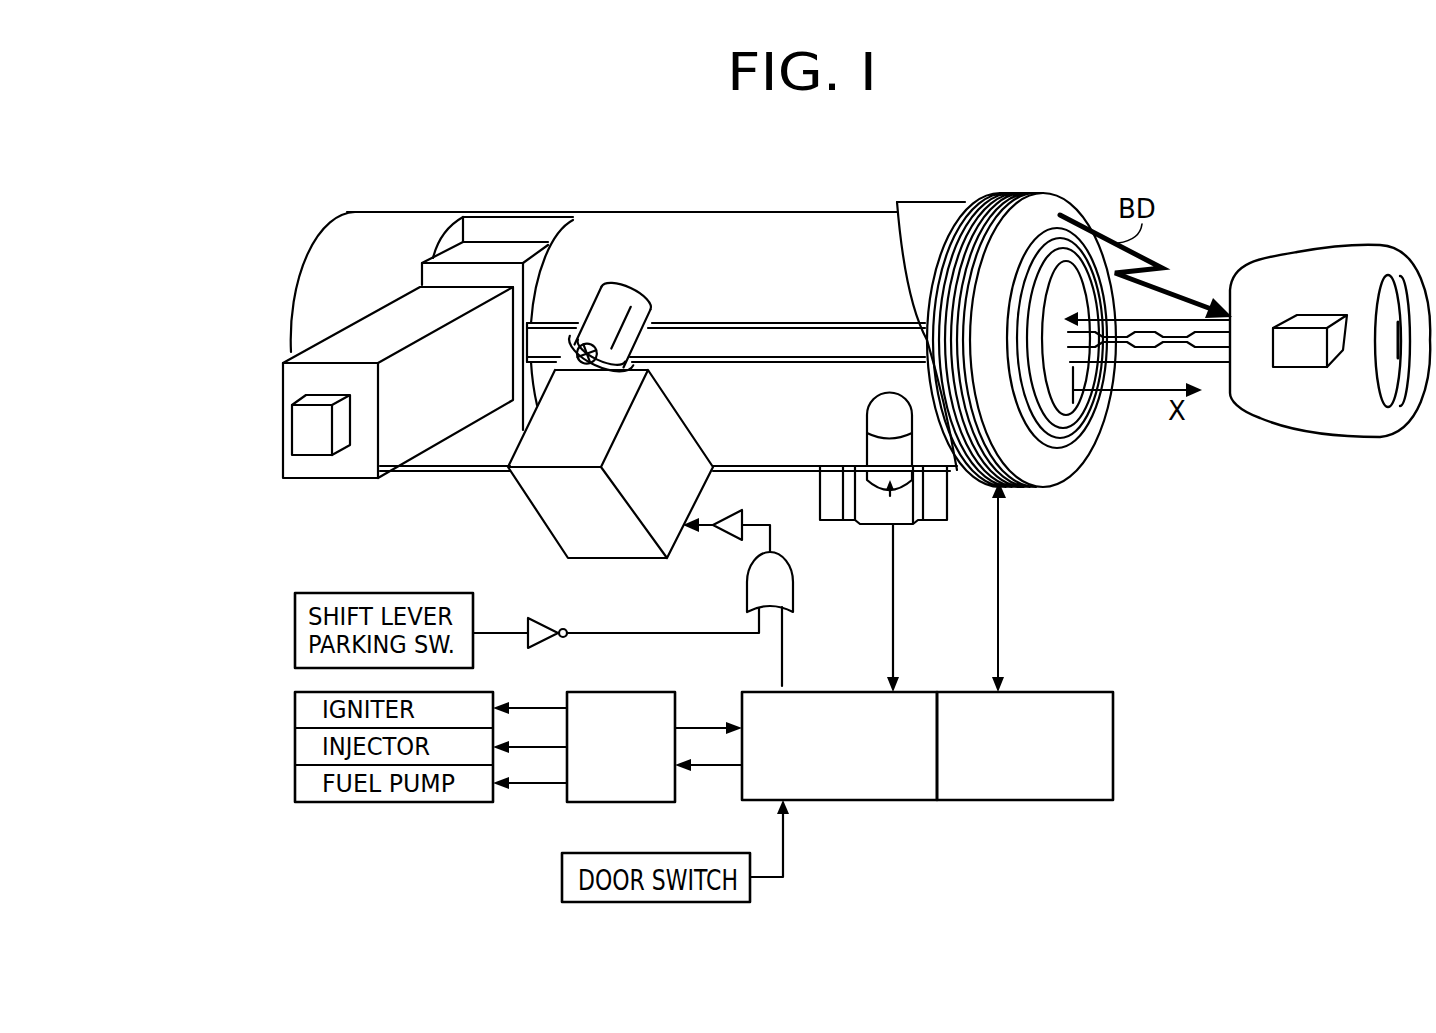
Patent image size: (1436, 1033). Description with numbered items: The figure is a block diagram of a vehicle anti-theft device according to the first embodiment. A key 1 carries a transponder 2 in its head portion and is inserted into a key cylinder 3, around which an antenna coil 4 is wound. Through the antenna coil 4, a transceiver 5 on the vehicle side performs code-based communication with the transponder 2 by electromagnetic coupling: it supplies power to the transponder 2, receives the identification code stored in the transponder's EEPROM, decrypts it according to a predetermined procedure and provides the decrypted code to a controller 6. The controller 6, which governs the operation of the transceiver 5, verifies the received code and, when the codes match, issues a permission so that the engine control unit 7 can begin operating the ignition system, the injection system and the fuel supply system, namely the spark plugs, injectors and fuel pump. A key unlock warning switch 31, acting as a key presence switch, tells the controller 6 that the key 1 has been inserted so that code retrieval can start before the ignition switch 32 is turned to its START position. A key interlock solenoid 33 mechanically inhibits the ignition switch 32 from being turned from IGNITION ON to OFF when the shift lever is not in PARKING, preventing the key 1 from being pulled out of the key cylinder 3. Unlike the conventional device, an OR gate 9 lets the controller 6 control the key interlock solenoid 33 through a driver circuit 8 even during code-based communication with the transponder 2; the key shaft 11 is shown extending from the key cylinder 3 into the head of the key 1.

The key 1 is at (1393, 256).
The transponder 2 is at (1298, 358).
The key cylinder 3 is at (723, 228).
The antenna coil 4 is at (997, 200).
The transceiver 5 is at (993, 802).
The controller 6 is at (838, 802).
The engine control unit (ECU) 7 is at (677, 790).
The driver circuit 8 is at (742, 521).
The OR gate 9 is at (795, 592).
The key shaft / key plate 11 is at (1122, 345).
The key unlock warning switch 31 is at (933, 513).
The ignition switch 32 is at (392, 223).
The key interlock solenoid 33 is at (548, 512).